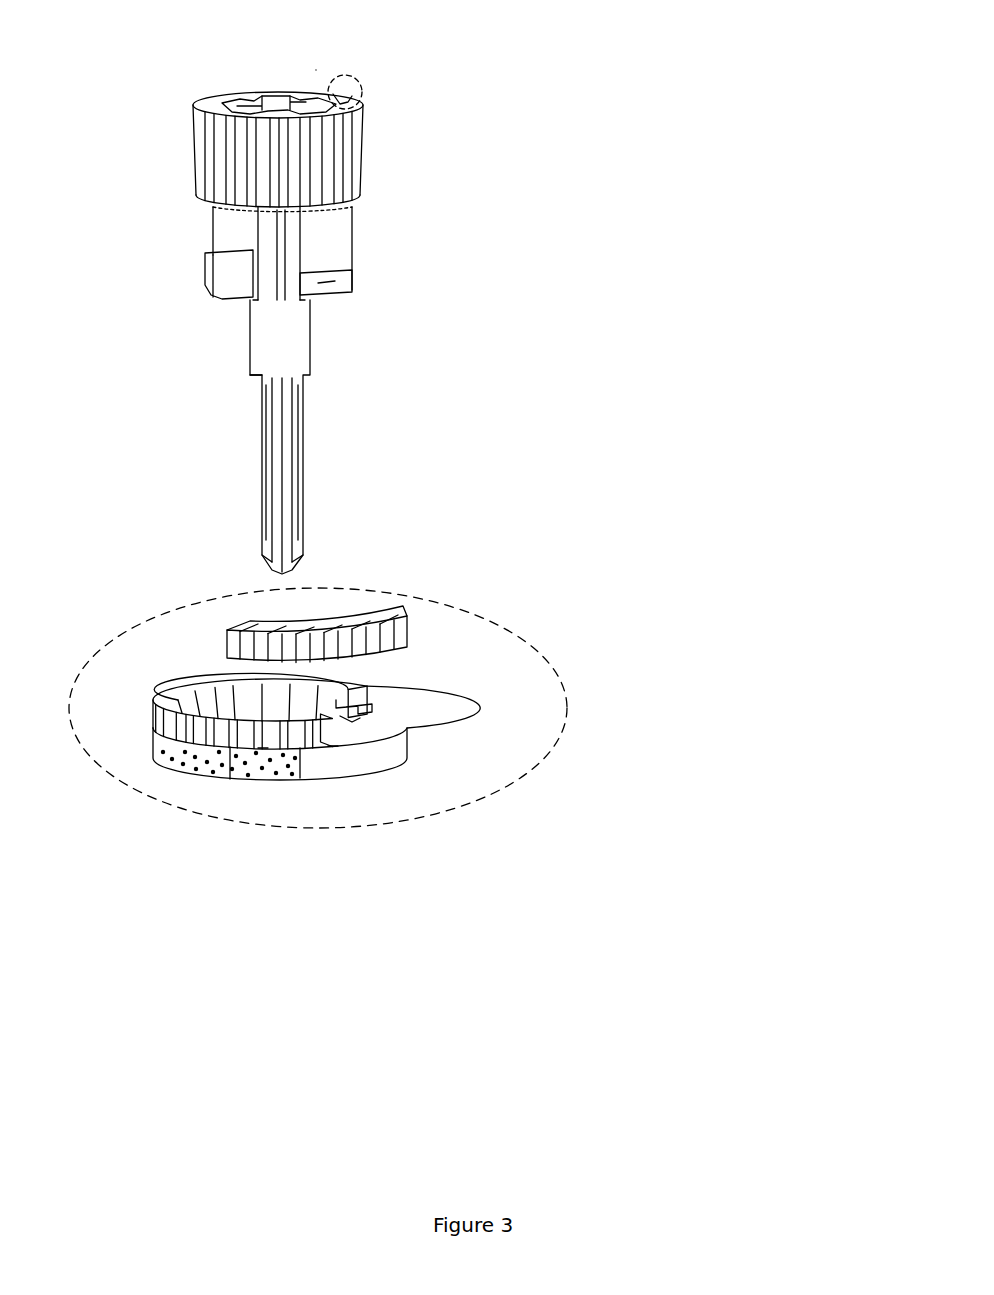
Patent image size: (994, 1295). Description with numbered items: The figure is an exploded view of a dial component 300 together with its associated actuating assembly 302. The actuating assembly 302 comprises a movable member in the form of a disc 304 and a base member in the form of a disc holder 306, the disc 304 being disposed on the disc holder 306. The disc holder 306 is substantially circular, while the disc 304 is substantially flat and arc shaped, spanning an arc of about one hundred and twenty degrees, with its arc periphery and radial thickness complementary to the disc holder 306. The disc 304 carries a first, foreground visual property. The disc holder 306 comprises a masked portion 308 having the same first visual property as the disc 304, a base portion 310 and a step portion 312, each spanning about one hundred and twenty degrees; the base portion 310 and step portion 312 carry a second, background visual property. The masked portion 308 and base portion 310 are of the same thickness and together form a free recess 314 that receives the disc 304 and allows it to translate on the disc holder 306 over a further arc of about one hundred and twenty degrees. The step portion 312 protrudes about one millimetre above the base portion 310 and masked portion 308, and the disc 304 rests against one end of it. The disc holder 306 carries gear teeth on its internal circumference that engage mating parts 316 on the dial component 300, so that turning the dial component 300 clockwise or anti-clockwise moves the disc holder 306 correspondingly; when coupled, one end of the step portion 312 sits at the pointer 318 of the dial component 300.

The dial component 300 is at (316, 70).
The actuating assembly 302 is at (530, 642).
The disc 304 is at (377, 617).
The disc holder 306 is at (387, 764).
The masked portion 308 is at (233, 762).
The base portion 310 is at (385, 722).
The step portion 312 is at (196, 693).
The recess 314 is at (333, 745).
The mating parts 316 is at (318, 275).
The pointer 318 is at (340, 95).